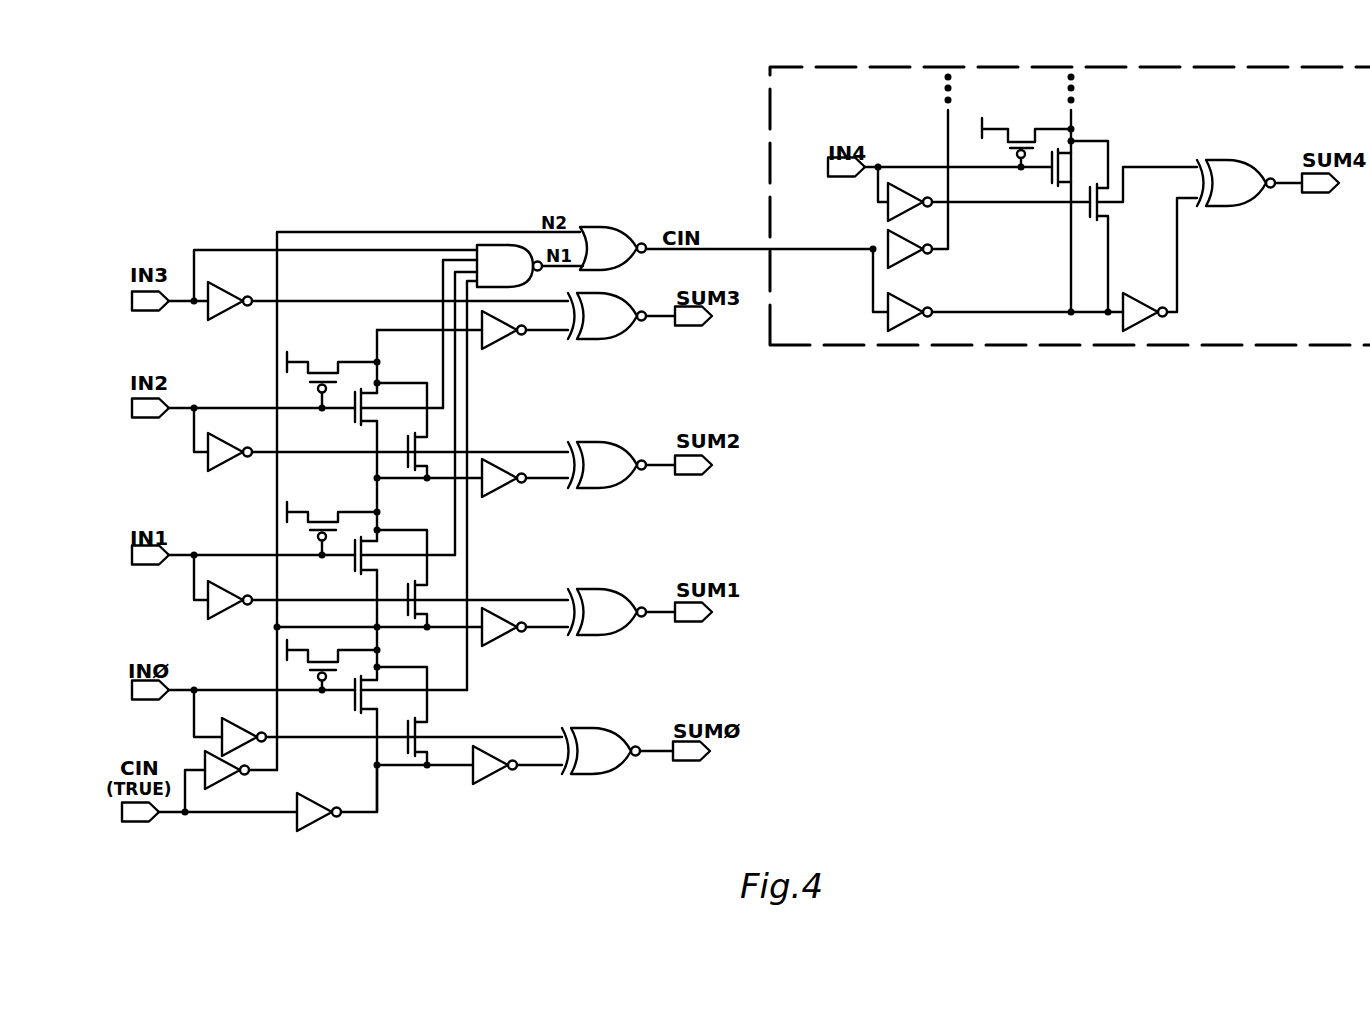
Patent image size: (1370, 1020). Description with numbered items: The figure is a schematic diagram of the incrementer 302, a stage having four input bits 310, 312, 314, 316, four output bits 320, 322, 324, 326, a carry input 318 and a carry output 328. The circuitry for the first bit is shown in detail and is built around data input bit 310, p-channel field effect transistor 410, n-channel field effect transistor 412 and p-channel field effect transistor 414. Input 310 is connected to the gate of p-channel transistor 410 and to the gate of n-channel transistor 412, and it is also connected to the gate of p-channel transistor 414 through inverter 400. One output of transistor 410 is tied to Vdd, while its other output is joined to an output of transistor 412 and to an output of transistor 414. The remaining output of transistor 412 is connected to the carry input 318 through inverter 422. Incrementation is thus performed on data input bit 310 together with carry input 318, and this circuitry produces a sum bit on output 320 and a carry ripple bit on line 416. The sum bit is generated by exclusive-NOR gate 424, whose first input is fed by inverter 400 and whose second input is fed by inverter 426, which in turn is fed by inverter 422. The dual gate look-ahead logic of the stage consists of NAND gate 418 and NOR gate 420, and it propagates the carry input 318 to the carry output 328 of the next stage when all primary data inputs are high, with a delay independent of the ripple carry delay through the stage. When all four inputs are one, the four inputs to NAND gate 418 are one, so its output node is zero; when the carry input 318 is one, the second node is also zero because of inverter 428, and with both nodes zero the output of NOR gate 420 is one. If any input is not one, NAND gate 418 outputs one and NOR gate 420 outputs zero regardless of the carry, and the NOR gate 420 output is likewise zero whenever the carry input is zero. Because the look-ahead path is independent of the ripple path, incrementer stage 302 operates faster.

The incrementer 302 is at (740, 418).
The data input bit 310 is at (132, 675).
The input bit 312 is at (140, 542).
The input bit 314 is at (133, 400).
The input bit 316 is at (130, 298).
The carry input 318 is at (131, 819).
The output bit 320 is at (715, 749).
The output bit 322 is at (707, 623).
The output bit 324 is at (698, 476).
The output bit 326 is at (695, 327).
The carry output 328 is at (874, 249).
The inverter 400 is at (226, 720).
The p-channel field effect transistor 410 is at (277, 632).
The n-channel field effect transistor 412 is at (357, 718).
The p-channel field effect transistor 414 is at (430, 738).
The carry ripple line 416 is at (380, 645).
The NAND gate 418 is at (499, 248).
The NOR gate 420 is at (627, 203).
The inverter 422 is at (315, 820).
The exclusive-NOR gate 424 is at (616, 734).
The inverter 426 is at (490, 784).
The inverter 428 is at (192, 756).